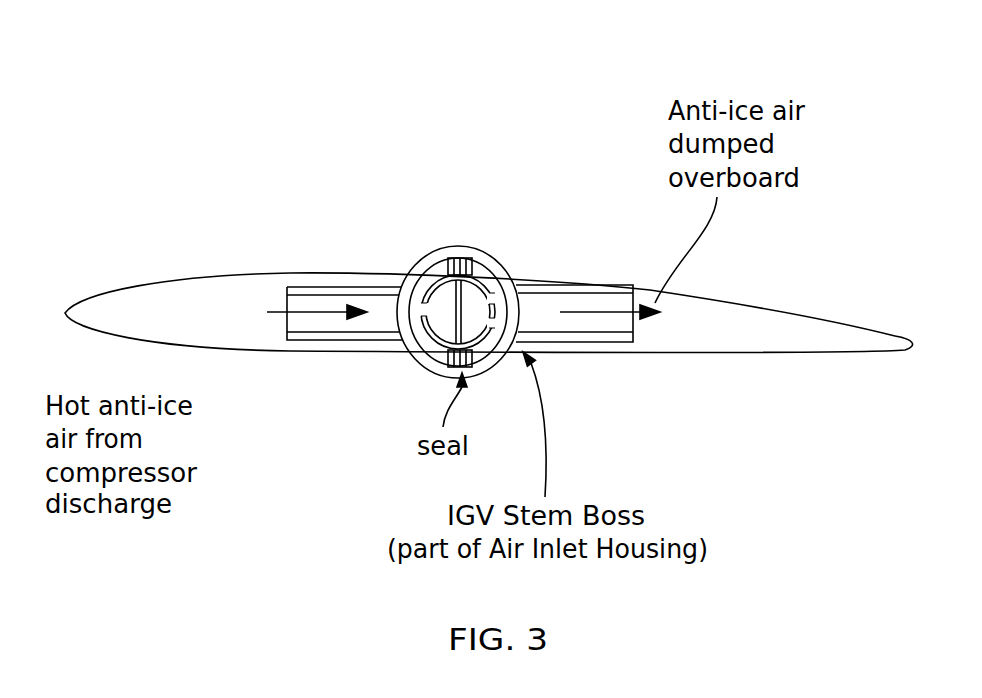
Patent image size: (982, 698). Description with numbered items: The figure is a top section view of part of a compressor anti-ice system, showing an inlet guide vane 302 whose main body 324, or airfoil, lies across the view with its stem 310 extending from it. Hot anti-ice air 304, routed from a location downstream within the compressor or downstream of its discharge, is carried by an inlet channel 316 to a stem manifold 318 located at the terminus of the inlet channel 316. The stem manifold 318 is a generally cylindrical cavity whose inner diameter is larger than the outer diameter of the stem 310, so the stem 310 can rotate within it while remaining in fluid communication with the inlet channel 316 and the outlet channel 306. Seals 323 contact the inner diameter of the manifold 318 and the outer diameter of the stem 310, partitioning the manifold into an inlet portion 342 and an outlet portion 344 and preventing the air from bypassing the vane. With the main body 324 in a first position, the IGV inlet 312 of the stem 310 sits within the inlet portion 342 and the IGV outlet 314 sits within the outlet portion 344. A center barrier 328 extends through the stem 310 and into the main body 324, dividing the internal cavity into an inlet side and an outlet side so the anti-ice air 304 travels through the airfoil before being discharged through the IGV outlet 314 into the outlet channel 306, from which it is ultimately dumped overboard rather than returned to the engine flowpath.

The inlet guide vane 302 is at (848, 385).
The anti-ice air 304 is at (268, 314).
The outlet channel 306 is at (620, 303).
The stem 310 is at (408, 348).
The IGV inlet 312 is at (148, 201).
The IGV outlet 314 is at (498, 42).
The inlet channel 316 is at (303, 322).
The stem manifold 318 is at (293, 57).
The seals 323 is at (466, 154).
The main body 324 is at (925, 266).
The center barrier 328 is at (480, 312).
The inlet portion 342 is at (435, 260).
The outlet portion 344 is at (512, 258).